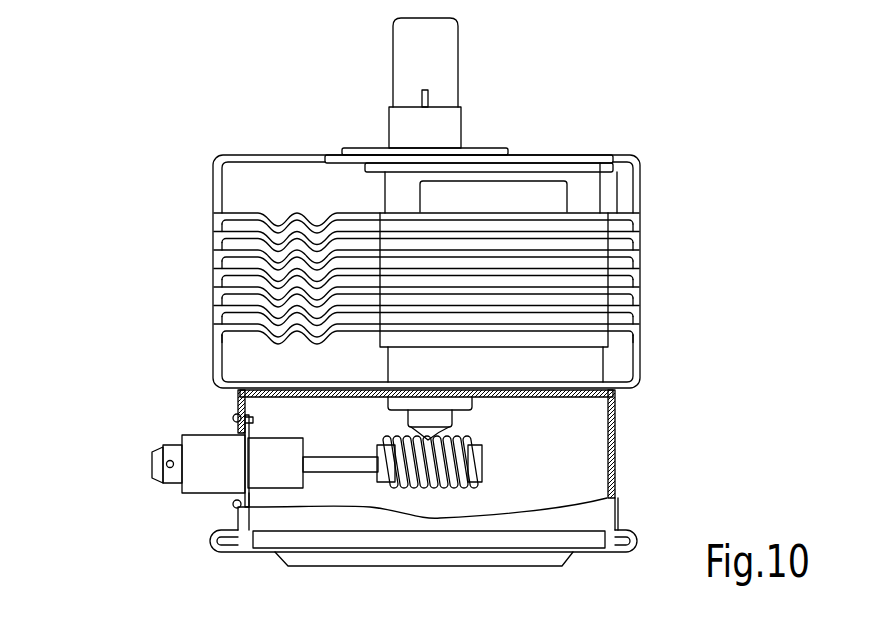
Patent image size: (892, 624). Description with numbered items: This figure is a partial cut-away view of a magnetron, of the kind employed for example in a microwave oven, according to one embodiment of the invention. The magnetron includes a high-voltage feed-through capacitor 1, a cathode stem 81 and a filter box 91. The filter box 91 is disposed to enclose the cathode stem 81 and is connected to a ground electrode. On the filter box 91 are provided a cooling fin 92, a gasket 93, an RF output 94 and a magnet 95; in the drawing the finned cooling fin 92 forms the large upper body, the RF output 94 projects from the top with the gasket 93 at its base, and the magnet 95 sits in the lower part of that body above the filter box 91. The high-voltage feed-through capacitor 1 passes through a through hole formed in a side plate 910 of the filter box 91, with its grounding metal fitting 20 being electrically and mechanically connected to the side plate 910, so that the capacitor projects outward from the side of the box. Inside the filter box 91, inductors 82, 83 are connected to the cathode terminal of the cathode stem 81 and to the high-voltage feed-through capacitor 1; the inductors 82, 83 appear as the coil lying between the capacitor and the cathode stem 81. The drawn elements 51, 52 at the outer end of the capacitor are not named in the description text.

The RF output 94 is at (458, 43).
The gasket 93 is at (510, 153).
The cooling fin 92 is at (641, 222).
The magnet 95 is at (603, 367).
The filter box 91 is at (618, 513).
The side plate 910 is at (240, 405).
The cathode stem 81 is at (472, 402).
The inductor 82 is at (471, 523).
The inductor 83 is at (470, 487).
The grounding metal fitting 20 is at (250, 462).
The connector 51 is at (142, 456).
The connector 52 is at (148, 478).
The high-voltage feed-through capacitor 1 is at (142, 491).